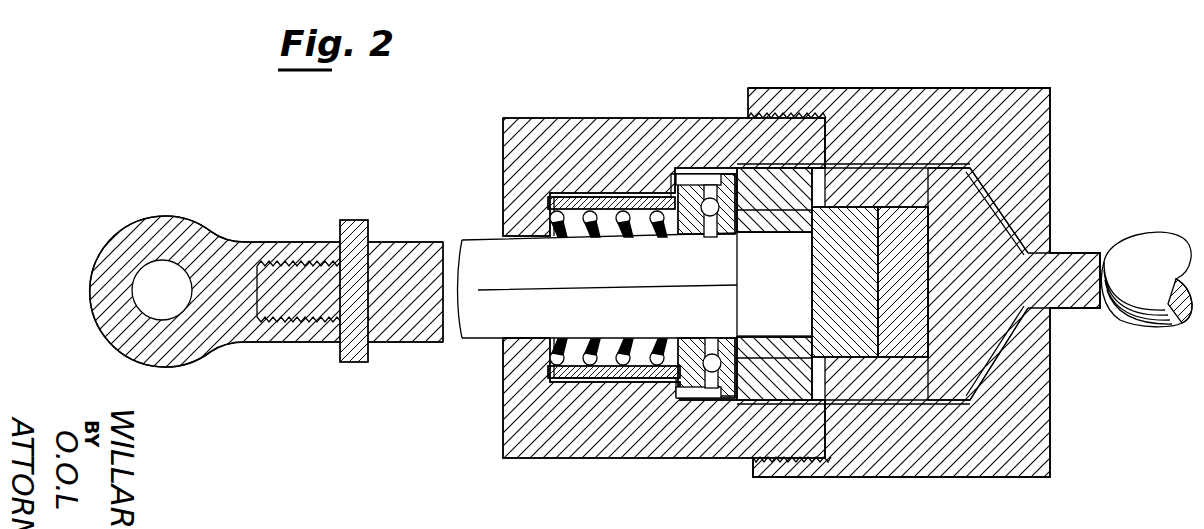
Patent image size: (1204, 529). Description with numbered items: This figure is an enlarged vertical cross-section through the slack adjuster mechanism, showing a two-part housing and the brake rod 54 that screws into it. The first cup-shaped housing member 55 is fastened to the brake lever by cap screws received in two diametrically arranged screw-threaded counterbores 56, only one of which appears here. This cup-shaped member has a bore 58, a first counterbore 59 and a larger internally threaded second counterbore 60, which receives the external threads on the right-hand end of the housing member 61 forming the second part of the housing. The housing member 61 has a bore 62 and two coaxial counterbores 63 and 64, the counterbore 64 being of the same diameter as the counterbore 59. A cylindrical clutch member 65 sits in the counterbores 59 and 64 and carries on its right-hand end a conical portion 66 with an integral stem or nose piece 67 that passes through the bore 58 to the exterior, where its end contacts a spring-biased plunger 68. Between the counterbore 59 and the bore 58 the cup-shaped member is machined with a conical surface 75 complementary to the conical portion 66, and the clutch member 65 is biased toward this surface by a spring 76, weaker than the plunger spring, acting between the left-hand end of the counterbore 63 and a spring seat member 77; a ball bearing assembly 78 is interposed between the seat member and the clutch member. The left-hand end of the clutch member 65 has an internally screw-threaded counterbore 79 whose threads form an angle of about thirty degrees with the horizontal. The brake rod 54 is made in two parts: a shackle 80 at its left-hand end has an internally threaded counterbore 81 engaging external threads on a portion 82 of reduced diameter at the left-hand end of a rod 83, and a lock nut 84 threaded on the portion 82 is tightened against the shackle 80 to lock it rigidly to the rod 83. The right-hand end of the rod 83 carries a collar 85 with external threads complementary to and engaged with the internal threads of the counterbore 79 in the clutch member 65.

The brake rod 54 is at (332, 341).
The first cup-shaped housing member 55 is at (1000, 465).
The screw-threaded counterbore 56 is at (880, 258).
The bore 58 is at (1045, 256).
The first counterbore 59 is at (902, 165).
The second counterbore 60 is at (786, 118).
The housing member 61 is at (635, 450).
The bore 62 is at (520, 240).
The counterbore 63 is at (595, 382).
The counterbore 64 is at (760, 402).
The cylindrical clutch member 65 is at (960, 378).
The conical portion 66 is at (990, 335).
The stem or nose piece 67 is at (1092, 306).
The spring-biased plunger 68 is at (1143, 246).
The conical surface 75 is at (990, 207).
The spring 76 is at (548, 199).
The spring seat member 77 is at (690, 386).
The ball bearing assembly 78 is at (714, 380).
The internally screw-threaded counterbore 79 is at (800, 358).
The shackle 80 is at (190, 238).
The internally threaded counterbore 81 is at (288, 320).
The portion of reduced diameter 82 is at (308, 263).
The rod 83 is at (456, 338).
The lock nut 84 is at (354, 222).
The collar 85 is at (858, 345).